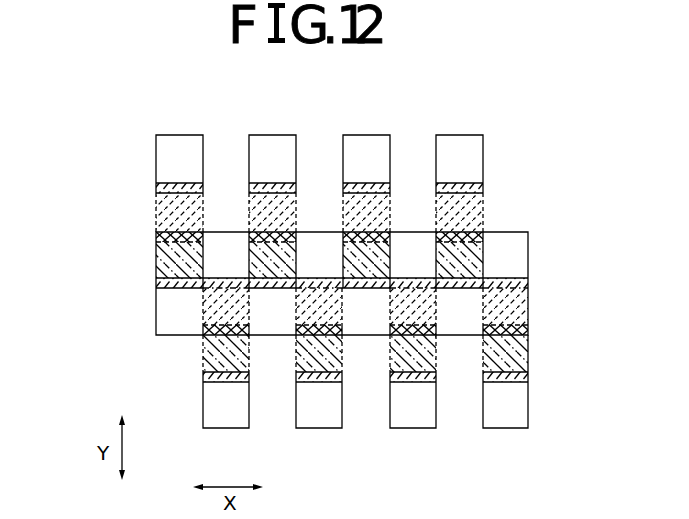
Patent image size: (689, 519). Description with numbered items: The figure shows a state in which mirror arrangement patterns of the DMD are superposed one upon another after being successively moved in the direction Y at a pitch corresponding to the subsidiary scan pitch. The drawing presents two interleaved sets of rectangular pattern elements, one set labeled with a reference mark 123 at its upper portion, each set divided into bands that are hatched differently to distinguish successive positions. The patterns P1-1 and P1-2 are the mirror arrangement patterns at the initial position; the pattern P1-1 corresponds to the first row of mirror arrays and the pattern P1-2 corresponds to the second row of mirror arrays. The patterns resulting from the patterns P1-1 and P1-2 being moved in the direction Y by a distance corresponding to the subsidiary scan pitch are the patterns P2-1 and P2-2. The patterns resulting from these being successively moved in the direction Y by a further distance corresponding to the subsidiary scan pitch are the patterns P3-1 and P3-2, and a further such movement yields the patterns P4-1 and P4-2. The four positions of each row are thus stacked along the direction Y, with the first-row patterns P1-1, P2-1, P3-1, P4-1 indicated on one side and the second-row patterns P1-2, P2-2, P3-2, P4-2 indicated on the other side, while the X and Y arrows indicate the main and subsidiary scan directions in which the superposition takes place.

The electrode pattern 123 is at (268, 150).
The mirror arrangement pattern at the initial position P1-1 is at (265, 164).
The mirror arrangement pattern P2-1 is at (265, 213).
The mirror arrangement pattern P3-1 is at (265, 260).
The mirror arrangement pattern P4-1 is at (288, 303).
The mirror arrangement pattern at the initial position P1-2 is at (390, 283).
The mirror arrangement pattern P2-2 is at (414, 311).
The mirror arrangement pattern P3-2 is at (414, 354).
The mirror arrangement pattern P4-2 is at (414, 400).